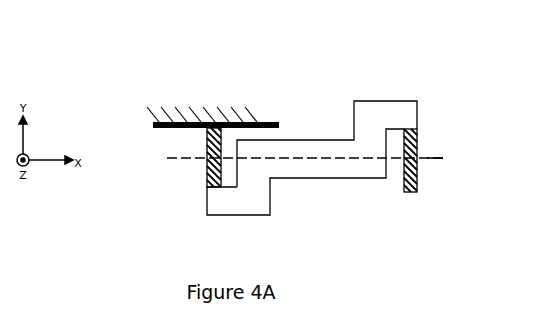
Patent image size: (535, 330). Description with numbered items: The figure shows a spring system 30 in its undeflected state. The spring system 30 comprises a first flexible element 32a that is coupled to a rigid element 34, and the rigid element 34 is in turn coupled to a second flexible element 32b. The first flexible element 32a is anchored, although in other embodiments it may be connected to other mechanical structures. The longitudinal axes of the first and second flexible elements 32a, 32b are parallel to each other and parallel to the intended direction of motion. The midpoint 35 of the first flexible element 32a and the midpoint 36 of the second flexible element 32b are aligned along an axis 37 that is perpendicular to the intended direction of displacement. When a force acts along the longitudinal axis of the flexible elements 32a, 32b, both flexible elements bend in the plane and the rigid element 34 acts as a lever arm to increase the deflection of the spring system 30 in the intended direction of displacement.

The spring system 30 is at (262, 78).
The first flexible element 32a is at (208, 174).
The second flexible element 32b is at (413, 148).
The rigid element 34 is at (374, 100).
The midpoint of the first flexible element 35 is at (208, 158).
The midpoint of the second flexible element 36 is at (413, 158).
The axis 37 is at (433, 162).